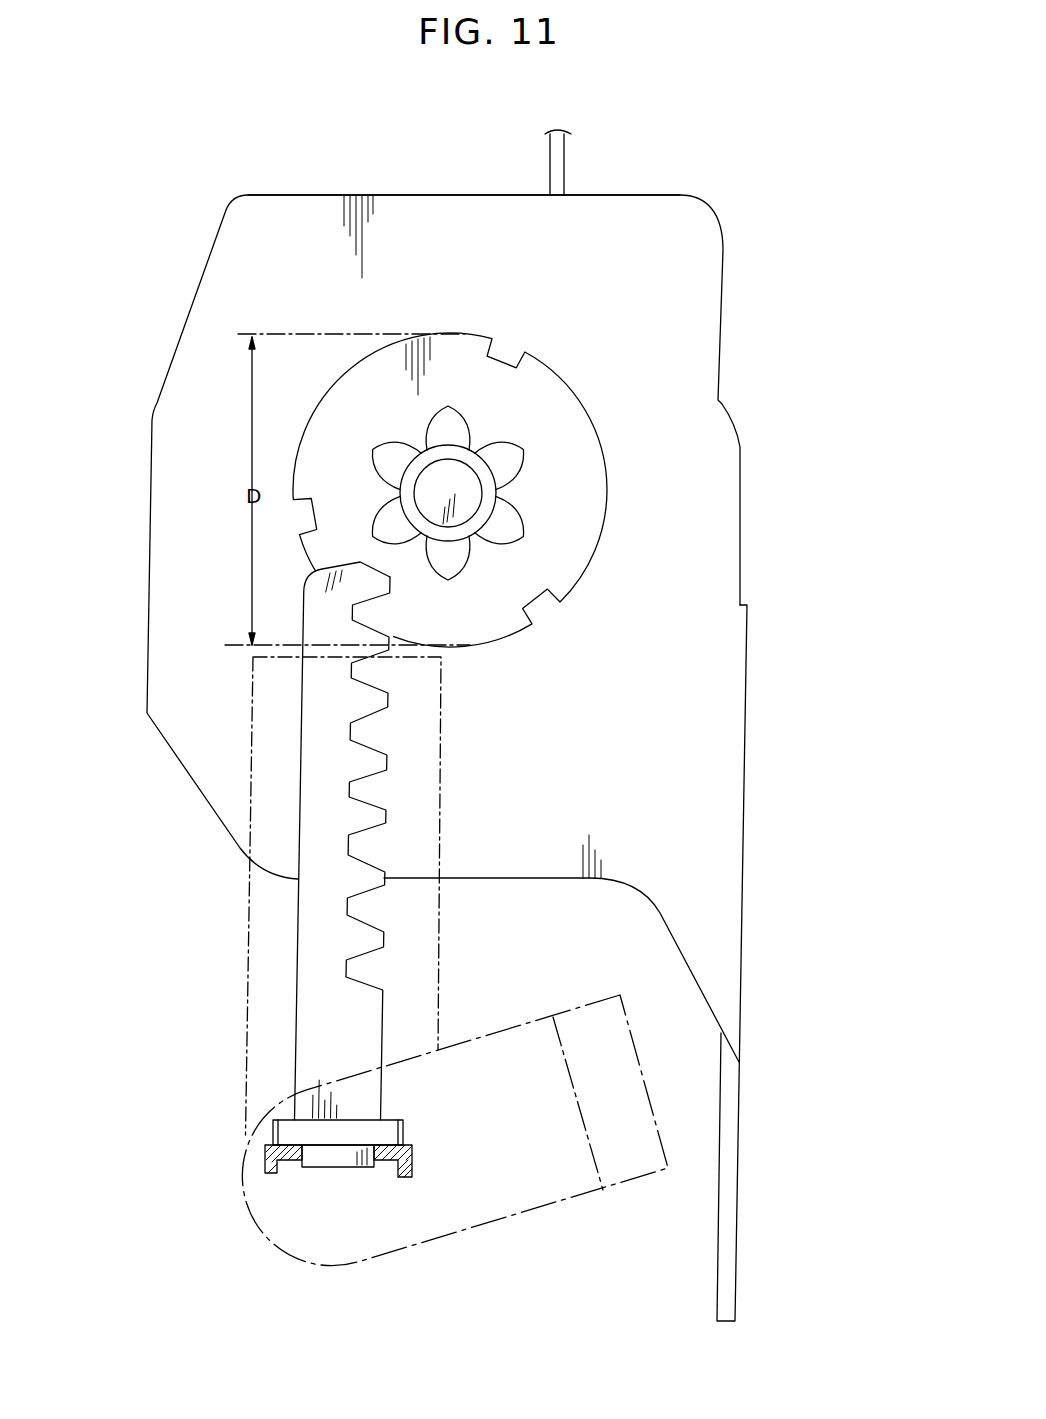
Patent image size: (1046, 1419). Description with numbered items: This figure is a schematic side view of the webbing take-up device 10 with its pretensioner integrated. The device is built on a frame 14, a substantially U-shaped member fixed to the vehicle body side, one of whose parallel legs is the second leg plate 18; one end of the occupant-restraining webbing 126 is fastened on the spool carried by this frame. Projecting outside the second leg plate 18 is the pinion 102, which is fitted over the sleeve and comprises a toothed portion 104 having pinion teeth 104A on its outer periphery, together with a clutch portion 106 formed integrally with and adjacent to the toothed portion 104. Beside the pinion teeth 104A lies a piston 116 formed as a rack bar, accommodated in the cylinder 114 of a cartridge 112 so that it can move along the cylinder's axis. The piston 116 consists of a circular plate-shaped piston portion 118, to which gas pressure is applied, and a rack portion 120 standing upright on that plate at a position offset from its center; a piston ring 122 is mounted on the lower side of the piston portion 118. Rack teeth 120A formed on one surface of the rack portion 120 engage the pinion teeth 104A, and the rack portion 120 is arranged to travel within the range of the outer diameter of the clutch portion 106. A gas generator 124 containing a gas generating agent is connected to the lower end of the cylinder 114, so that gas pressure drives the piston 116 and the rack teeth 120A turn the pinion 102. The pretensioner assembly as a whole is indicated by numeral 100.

The webbing take-up device 10 is at (749, 328).
The frame 14 is at (741, 541).
The second leg plate 18 is at (300, 213).
The drive mechanism 100 is at (211, 1076).
The pinion 102 is at (636, 302).
The toothed portion 104 is at (531, 428).
The pinion teeth 104A is at (506, 468).
The clutch portion 106 is at (569, 383).
The cartridge 112 is at (248, 968).
The cylinder 114 is at (263, 915).
The piston 116 is at (301, 780).
The piston portion 118 is at (394, 1141).
The rack portion 120 is at (335, 841).
The rack teeth 120A is at (388, 752).
The piston ring 122 is at (263, 1168).
The gas generator 124 is at (516, 1216).
The webbing 126 is at (564, 138).